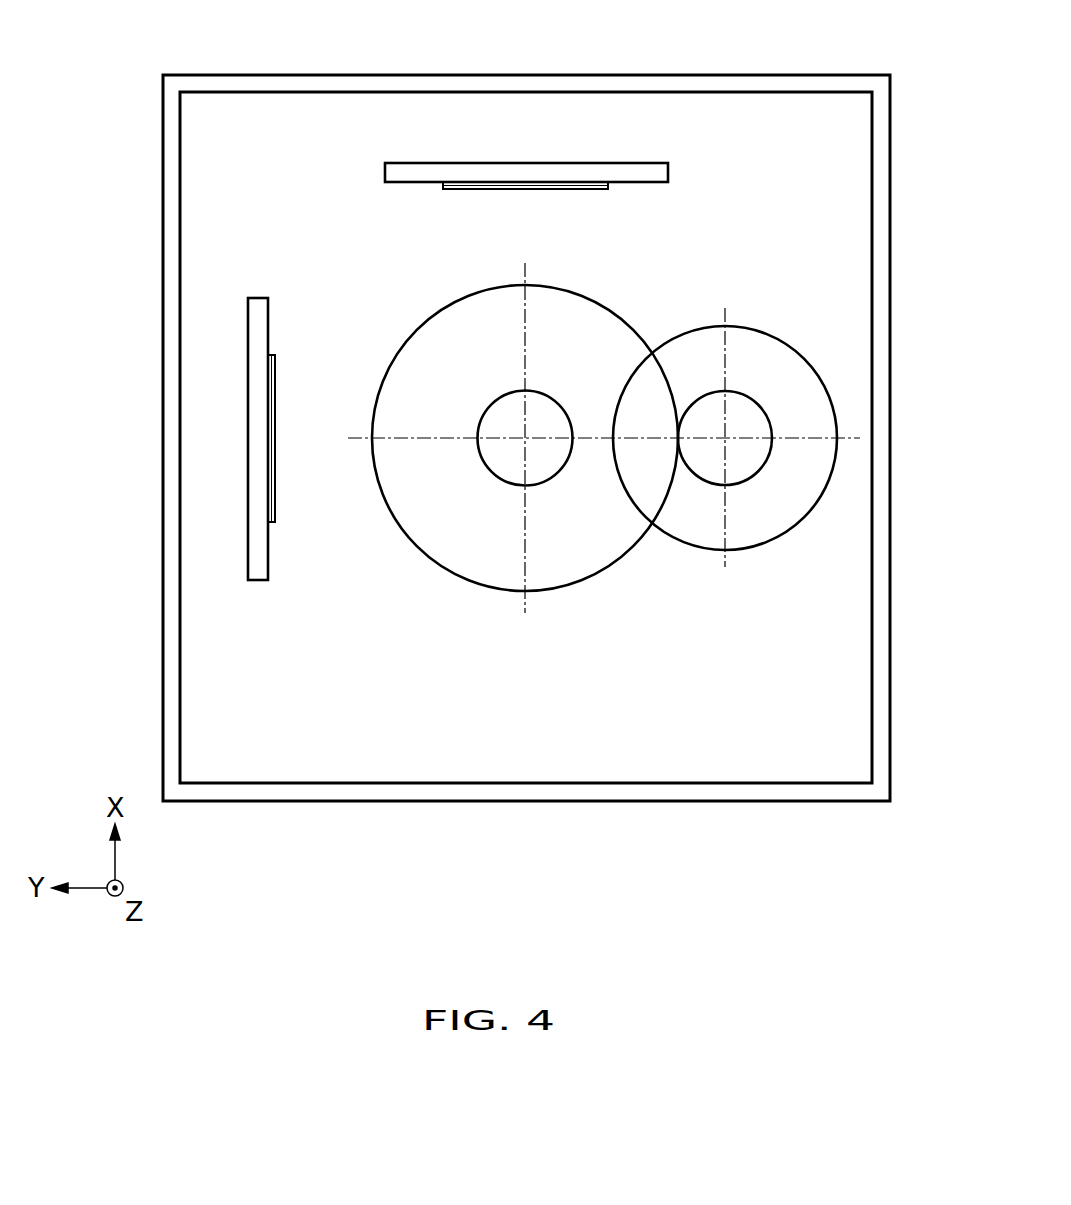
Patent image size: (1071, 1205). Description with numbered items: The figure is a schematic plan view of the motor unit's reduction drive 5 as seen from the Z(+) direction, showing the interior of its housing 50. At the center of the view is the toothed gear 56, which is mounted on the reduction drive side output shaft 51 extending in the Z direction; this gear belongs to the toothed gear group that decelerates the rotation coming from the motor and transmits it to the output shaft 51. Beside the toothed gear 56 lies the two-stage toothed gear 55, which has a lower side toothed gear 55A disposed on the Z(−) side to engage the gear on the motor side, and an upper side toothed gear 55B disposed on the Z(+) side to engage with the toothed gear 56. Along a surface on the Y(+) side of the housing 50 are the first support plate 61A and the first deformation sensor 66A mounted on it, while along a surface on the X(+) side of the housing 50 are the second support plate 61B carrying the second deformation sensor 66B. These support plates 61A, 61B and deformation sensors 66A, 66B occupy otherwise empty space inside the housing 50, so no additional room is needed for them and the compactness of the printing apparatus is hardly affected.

The reduction drive 5 is at (888, 128).
The housing 50 is at (668, 80).
The reduction drive side output shaft 51 is at (550, 396).
The two-stage toothed gear 55 is at (734, 377).
The lower side toothed gear 55A is at (785, 340).
The upper side toothed gear 55B is at (730, 367).
The toothed gear 56 is at (586, 297).
The first support plate 61A is at (258, 583).
The second support plate 61B is at (385, 168).
The first deformation sensor 66A is at (275, 525).
The second deformation sensor 66B is at (448, 186).